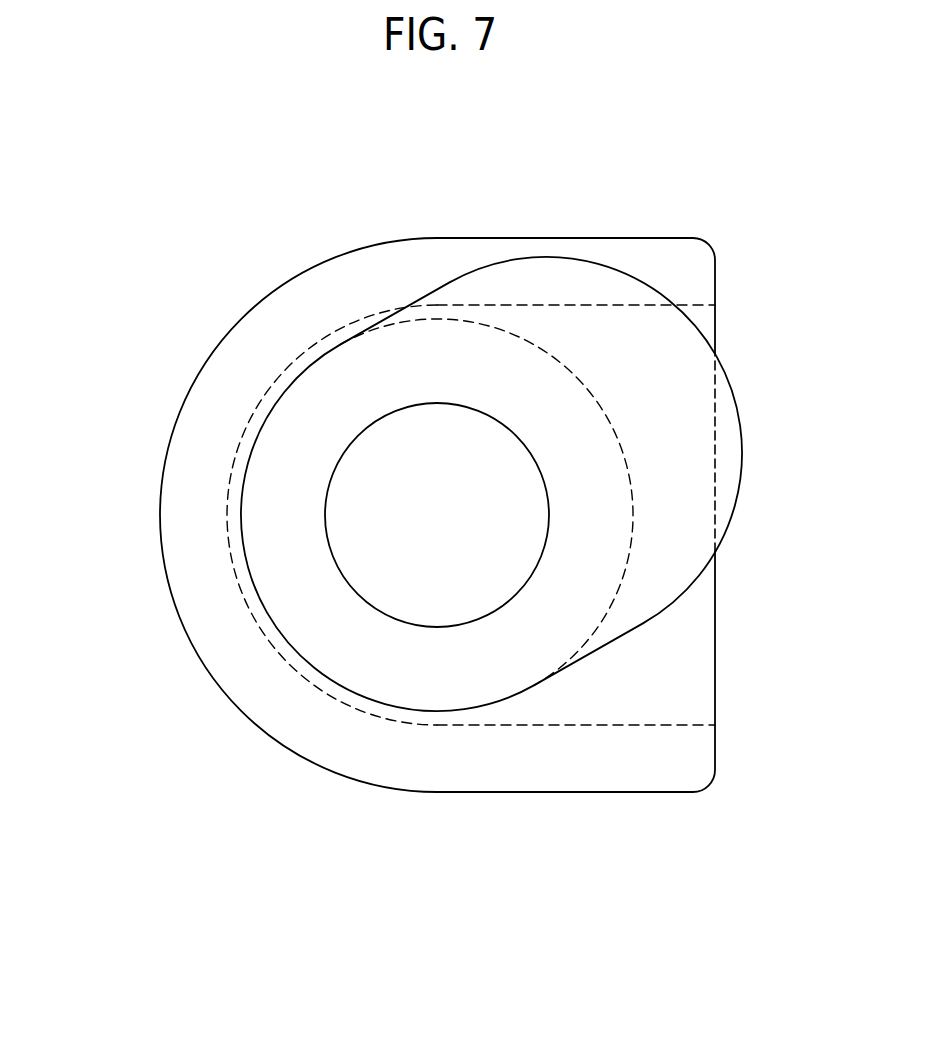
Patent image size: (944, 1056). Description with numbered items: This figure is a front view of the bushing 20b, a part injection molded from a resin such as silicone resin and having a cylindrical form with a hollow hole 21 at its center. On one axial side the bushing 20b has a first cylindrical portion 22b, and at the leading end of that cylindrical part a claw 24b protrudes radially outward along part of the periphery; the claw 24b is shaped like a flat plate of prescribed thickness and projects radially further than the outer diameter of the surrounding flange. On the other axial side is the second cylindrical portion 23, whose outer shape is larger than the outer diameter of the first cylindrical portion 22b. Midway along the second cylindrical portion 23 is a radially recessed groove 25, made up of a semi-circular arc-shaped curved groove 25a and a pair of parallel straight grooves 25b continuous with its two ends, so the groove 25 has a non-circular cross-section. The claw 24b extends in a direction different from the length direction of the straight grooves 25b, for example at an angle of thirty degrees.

The bushing 20b is at (441, 470).
The hollow hole 21 is at (375, 430).
The first cylindrical portion 22b is at (243, 508).
The second cylindrical portion 23 is at (163, 568).
The claw 24b is at (729, 383).
The groove 25 is at (411, 520).
The curved groove 25a is at (237, 442).
The straight groove 25b is at (613, 303).